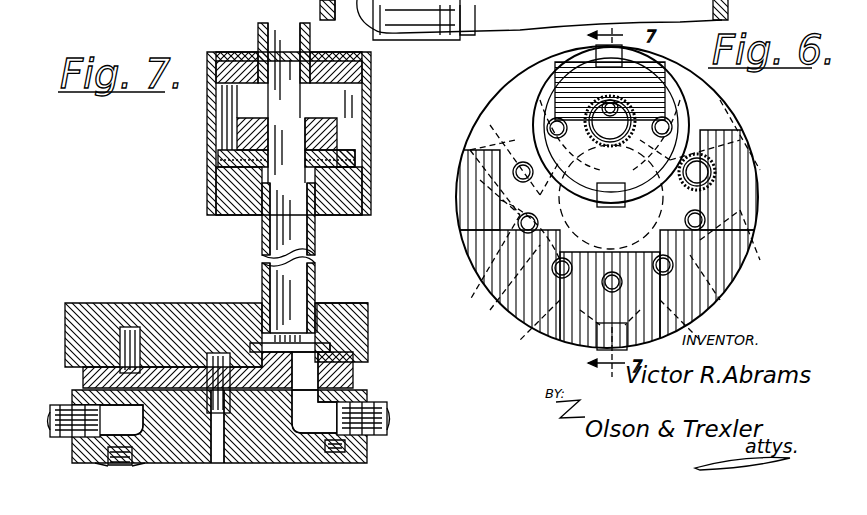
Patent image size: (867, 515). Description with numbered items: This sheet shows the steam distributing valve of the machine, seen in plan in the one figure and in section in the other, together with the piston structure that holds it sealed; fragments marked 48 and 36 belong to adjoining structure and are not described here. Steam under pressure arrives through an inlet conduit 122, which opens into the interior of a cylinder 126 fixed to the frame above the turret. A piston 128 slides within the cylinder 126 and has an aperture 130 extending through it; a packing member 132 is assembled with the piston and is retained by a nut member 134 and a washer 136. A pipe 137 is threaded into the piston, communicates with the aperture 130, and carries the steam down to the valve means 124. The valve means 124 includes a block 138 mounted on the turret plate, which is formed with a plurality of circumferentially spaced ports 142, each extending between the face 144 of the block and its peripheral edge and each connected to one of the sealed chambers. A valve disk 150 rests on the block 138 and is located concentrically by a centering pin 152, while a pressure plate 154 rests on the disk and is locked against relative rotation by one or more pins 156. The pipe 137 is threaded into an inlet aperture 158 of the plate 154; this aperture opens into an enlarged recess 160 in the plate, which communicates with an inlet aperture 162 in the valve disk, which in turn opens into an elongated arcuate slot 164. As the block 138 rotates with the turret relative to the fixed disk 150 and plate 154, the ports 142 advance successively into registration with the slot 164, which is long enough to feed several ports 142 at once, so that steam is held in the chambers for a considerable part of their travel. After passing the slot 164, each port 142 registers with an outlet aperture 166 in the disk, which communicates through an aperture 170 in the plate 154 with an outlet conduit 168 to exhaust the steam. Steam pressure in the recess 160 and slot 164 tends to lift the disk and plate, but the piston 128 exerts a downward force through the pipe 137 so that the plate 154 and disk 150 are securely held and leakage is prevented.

In FIG. 7, the inlet conduit 122 is at (258, 38).
In FIG. 7, the cylinder 126 is at (207, 115).
In FIG. 7, the piston 128 is at (237, 190).
In FIG. 7, the aperture 130 is at (268, 218).
In FIG. 7, the packing member 132 is at (222, 166).
In FIG. 7, the nut member 134 is at (340, 132).
In FIG. 7, the washer 136 is at (355, 162).
In FIG. 7, the pipe 137 is at (262, 263).
In FIG. 7, the valve means 124 is at (75, 298).
In FIG. 7, the valve disk 150 is at (160, 370).
In FIG. 7, the centering pin 152 is at (222, 352).
In FIG. 7, the pin 156 is at (112, 330).
In FIG. 7, the pressure plate 154 is at (344, 302).
In FIG. 7, the inlet aperture 158 is at (330, 330).
In FIG. 7, the recess 160 is at (340, 345).
In FIG. 7, the inlet aperture 162 is at (345, 357).
In FIG. 7, the face 144 is at (338, 366).
In FIG. 7, the ports 142 is at (350, 392).
In FIG. 6, the ports 142 is at (495, 290).
In FIG. 7, the block 138 is at (348, 448).
In FIG. 7, the arcuate slot 164 is at (390, 418).
In FIG. 6, the arcuate slot 164 is at (522, 122).
In FIG. 6, the outlet aperture 166 is at (700, 155).
In FIG. 6, the outlet conduit 168 is at (762, 172).
In FIG. 6, the aperture 170 is at (735, 262).
In FIG. 6, the shaft 48 is at (350, 3).
In FIG. 6, the bearing 36 is at (478, 15).